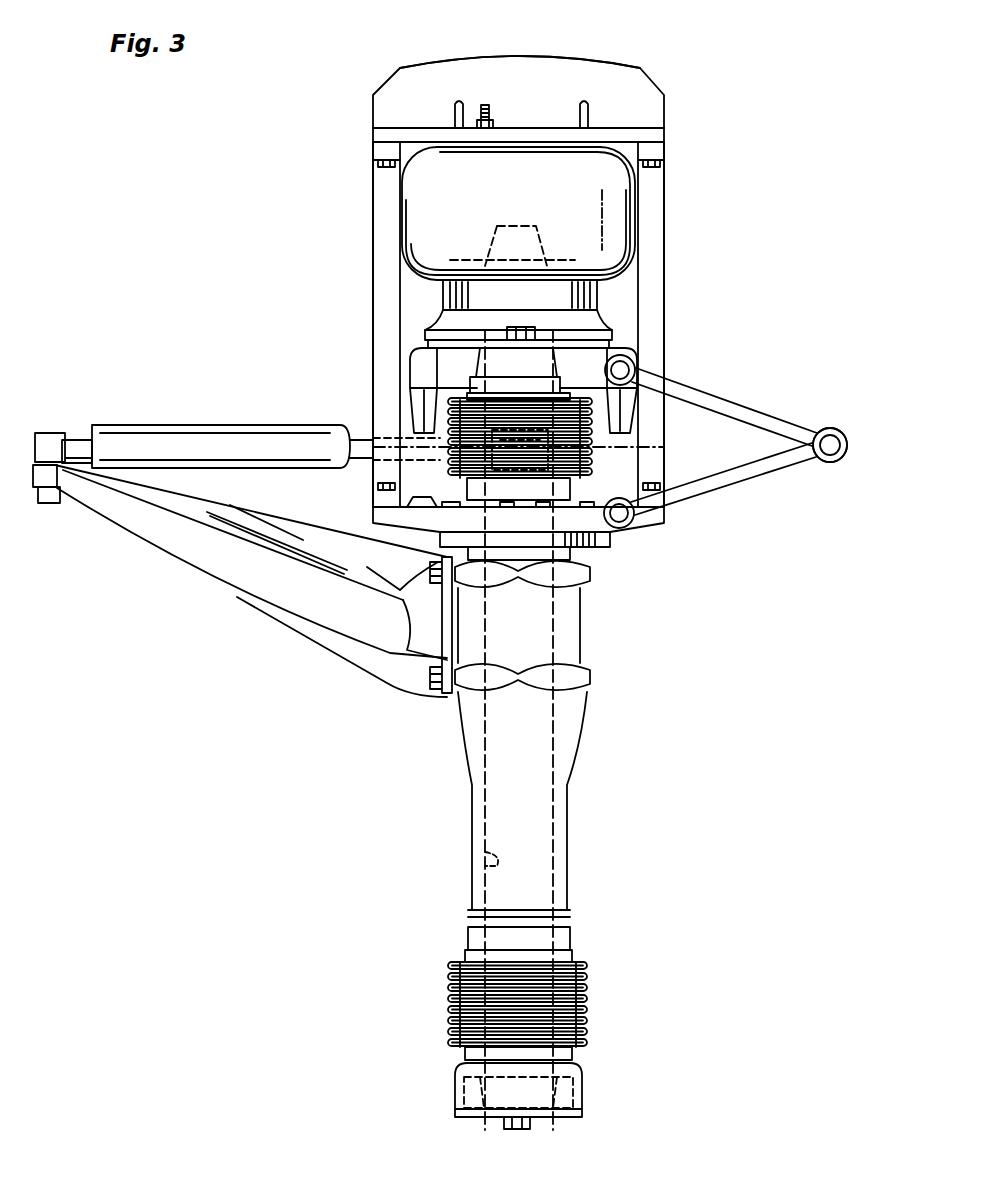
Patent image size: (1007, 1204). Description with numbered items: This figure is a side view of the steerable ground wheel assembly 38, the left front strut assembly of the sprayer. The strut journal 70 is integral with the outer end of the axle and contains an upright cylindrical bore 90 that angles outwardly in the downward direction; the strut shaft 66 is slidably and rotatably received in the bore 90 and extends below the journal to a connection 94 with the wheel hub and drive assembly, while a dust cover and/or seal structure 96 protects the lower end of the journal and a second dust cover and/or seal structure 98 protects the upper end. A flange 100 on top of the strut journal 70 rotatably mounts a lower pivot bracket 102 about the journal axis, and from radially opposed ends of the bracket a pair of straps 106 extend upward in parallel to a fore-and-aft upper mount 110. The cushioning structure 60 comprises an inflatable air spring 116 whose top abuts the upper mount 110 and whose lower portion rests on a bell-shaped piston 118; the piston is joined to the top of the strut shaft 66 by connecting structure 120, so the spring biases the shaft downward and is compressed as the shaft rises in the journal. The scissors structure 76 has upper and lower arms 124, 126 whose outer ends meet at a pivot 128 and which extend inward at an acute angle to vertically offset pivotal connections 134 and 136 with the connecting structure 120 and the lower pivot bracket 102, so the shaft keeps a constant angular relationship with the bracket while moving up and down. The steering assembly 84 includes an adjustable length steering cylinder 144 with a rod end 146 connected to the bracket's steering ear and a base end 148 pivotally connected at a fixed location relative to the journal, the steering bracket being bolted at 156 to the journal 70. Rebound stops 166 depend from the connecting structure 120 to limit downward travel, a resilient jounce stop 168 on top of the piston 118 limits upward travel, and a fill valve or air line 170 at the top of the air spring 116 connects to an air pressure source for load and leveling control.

The steerable ground wheel assembly 38 is at (705, 82).
The cushioning structure 60 is at (322, 184).
The strut shaft 66 is at (472, 790).
The strut journal 70 is at (567, 802).
The scissors structure 76 is at (849, 428).
The steering assembly 84 is at (125, 410).
The cylindrical bore 90 is at (485, 866).
The connection 94 is at (480, 1113).
The dust cover and/or seal structure 96 is at (440, 962).
The dust cover and/or seal structure 98 is at (440, 470).
The flange 100 is at (602, 562).
The lower pivot bracket 102 is at (598, 540).
The straps 106 is at (373, 232).
The upper mount 110 is at (410, 58).
The inflatable air spring 116 is at (478, 229).
The bell-shaped piston 118 is at (445, 300).
The connecting structure 120 is at (570, 350).
The upper arm 124 is at (752, 398).
The lower arm 126 is at (745, 492).
The pivot 128 is at (836, 463).
The pivotal connection 134 is at (636, 358).
The pivotal connection 136 is at (625, 528).
The steering cylinder 144 is at (165, 425).
The rod end 146 is at (664, 447).
The base end 148 is at (72, 432).
The bolted connection 156 is at (393, 625).
The rebound stops 166 is at (420, 412).
The jounce stop 168 is at (539, 226).
The fill valve or air line 170 is at (488, 118).